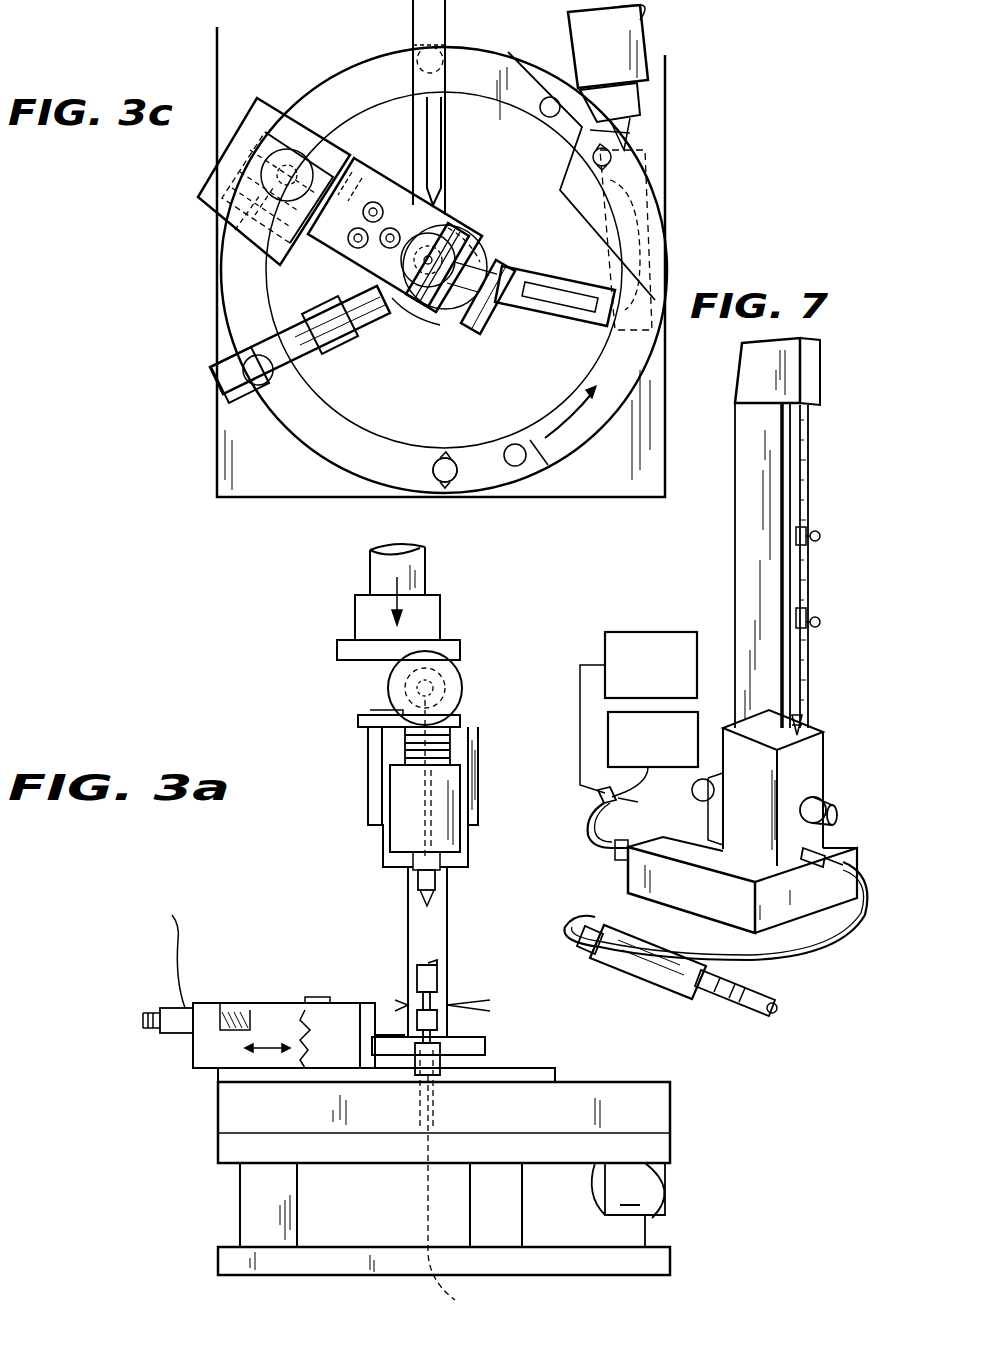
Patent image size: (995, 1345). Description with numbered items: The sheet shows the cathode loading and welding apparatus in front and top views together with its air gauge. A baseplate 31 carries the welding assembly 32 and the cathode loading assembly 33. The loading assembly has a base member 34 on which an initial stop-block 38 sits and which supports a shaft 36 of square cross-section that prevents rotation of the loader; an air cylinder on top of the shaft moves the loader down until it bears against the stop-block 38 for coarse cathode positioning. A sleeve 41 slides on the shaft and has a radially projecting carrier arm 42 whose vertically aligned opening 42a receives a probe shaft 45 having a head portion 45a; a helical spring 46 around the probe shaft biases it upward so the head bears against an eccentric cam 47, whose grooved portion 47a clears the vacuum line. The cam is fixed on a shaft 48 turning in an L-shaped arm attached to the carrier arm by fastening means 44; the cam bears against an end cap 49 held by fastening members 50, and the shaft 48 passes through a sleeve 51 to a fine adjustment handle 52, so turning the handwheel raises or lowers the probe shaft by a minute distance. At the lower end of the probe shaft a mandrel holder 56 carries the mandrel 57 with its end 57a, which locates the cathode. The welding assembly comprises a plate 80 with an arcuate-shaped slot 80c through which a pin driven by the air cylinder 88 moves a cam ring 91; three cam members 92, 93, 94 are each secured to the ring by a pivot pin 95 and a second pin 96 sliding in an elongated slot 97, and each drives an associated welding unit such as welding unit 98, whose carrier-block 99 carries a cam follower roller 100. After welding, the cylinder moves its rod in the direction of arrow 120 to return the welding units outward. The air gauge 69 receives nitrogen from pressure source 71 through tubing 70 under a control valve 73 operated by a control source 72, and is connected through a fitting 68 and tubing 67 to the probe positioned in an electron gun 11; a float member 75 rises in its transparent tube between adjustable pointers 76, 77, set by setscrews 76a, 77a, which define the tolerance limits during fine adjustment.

In FIG. 3c, the cam member 94 is at (350, 50).
In FIG. 3c, the sleeve 41 is at (274, 176).
In FIG. 3c, the carrier arm 42 is at (398, 200).
In FIG. 3a, the carrier arm 42 is at (390, 805).
In FIG. 3c, the welding unit 98 is at (450, 141).
In FIG. 3c, the pin 95 is at (548, 118).
In FIG. 3c, the grooved portion 47a is at (448, 195).
In FIG. 3c, the helical spring 46 is at (462, 220).
In FIG. 3a, the helical spring 46 is at (450, 755).
In FIG. 3c, the end cap 49 is at (478, 230).
In FIG. 3c, the fastening members 50 is at (482, 248).
In FIG. 3c, the shaft 48 is at (490, 262).
In FIG. 3c, the cam ring 91 is at (600, 166).
In FIG. 3a, the cam ring 91 is at (672, 1118).
In FIG. 3c, the cam member 93 is at (608, 218).
In FIG. 3c, the arrow 120 is at (640, 133).
In FIG. 3c, the arcuate-shaped slot 80c is at (665, 228).
In FIG. 3c, the air cylinder 88 is at (648, 45).
In FIG. 3a, the air cylinder 88 is at (428, 592).
In FIG. 3c, the cam follower roller 100 is at (262, 362).
In FIG. 3c, the elongated slot 97 is at (340, 350).
In FIG. 3a, the elongated slot 97 is at (318, 985).
In FIG. 3c, the fastening means 44 is at (375, 268).
In FIG. 3c, the head portion 45a is at (405, 268).
In FIG. 3a, the head portion 45a is at (465, 725).
In FIG. 3c, the cam member 47 is at (415, 285).
In FIG. 3c, the sleeve 51 is at (470, 305).
In FIG. 3c, the fine adjustment handle 52 is at (480, 334).
In FIG. 3a, the fine adjustment handle 52 is at (462, 700).
In FIG. 3c, the second pin 96 is at (458, 465).
In FIG. 3c, the cam member 92 is at (515, 470).
In FIG. 3a, the vertically aligned opening 42a is at (482, 806).
In FIG. 3a, the probe shaft 45 is at (450, 866).
In FIG. 3a, the mandrel holder 56 is at (440, 878).
In FIG. 7, the mandrel holder 56 is at (700, 990).
In FIG. 3a, the mandrel 57 is at (435, 895).
In FIG. 7, the mandrel 57 is at (740, 1000).
In FIG. 3a, the shaft 36 is at (450, 945).
In FIG. 3a, the cathode loading assembly 33 is at (419, 1093).
In FIG. 3a, the carrier-block 99 is at (274, 991).
In FIG. 3a, the initial stop-block 38 is at (487, 1040).
In FIG. 3a, the base member 34 is at (488, 1065).
In FIG. 3a, the plate 80 is at (218, 1145).
In FIG. 3a, the welding assembly 32 is at (303, 1178).
In FIG. 3a, the baseplate 31 is at (218, 1262).
In FIG. 7, the air gauge 69 is at (792, 533).
In FIG. 7, the adjustable pointer 77 is at (806, 542).
In FIG. 7, the setscrew 77a is at (818, 532).
In FIG. 7, the adjustable pointer 76 is at (808, 612).
In FIG. 7, the setscrew 76a is at (820, 623).
In FIG. 7, the float member 75 is at (805, 715).
In FIG. 7, the pressure source 71 is at (695, 735).
In FIG. 7, the fitting 68 is at (830, 835).
In FIG. 7, the tubing 67 is at (800, 954).
In FIG. 7, the nozzle outlet 57a is at (780, 1005).
In FIG. 7, the control source 72 is at (658, 630).
In FIG. 7, the electron gun 11 is at (669, 745).
In FIG. 7, the control valve 73 is at (610, 800).
In FIG. 7, the tubing 70 is at (590, 828).